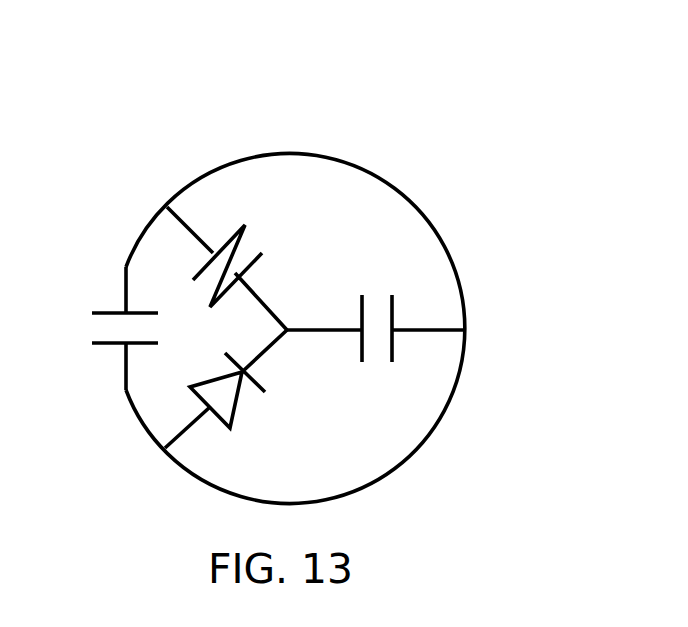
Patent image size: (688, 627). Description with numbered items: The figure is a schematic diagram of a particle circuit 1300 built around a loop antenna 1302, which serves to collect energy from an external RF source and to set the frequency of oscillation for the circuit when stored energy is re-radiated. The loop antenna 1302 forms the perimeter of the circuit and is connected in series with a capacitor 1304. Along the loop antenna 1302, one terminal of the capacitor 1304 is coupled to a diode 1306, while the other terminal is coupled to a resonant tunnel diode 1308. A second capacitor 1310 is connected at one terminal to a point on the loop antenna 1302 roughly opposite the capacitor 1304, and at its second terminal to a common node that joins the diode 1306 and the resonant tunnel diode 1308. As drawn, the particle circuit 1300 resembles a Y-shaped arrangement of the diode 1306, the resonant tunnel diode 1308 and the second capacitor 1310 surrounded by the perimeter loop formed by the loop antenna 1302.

The particle circuit 1300 is at (486, 93).
The loop antenna 1302 is at (288, 156).
The capacitor 1304 is at (110, 311).
The diode 1306 is at (235, 415).
The resonant tunnel diode 1308 is at (218, 250).
The second capacitor 1310 is at (359, 312).